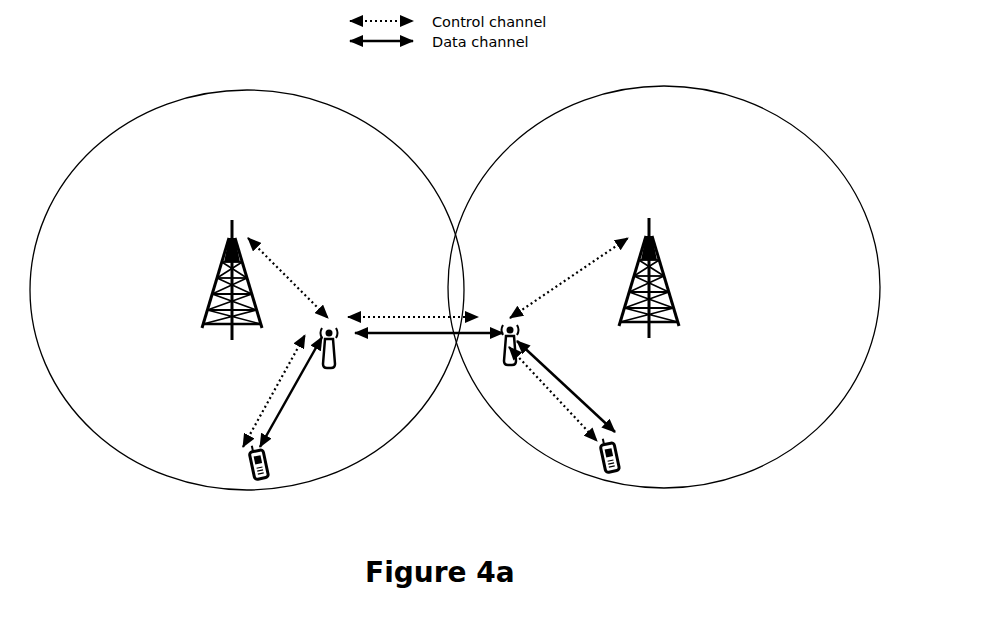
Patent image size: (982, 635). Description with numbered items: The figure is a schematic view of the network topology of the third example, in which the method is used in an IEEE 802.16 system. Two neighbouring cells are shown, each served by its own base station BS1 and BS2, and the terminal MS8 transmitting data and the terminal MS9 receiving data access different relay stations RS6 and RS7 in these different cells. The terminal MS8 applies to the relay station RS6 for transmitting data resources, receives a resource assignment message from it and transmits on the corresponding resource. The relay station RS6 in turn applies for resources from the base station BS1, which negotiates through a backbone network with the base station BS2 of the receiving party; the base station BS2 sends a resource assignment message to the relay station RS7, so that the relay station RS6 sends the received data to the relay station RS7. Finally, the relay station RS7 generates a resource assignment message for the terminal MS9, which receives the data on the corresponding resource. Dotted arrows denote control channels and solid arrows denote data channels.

The base station BS1 is at (228, 301).
The base station BS2 is at (649, 294).
The relay station RS6 is at (350, 359).
The relay station RS7 is at (511, 362).
The terminal MS8 is at (261, 480).
The terminal MS9 is at (611, 469).